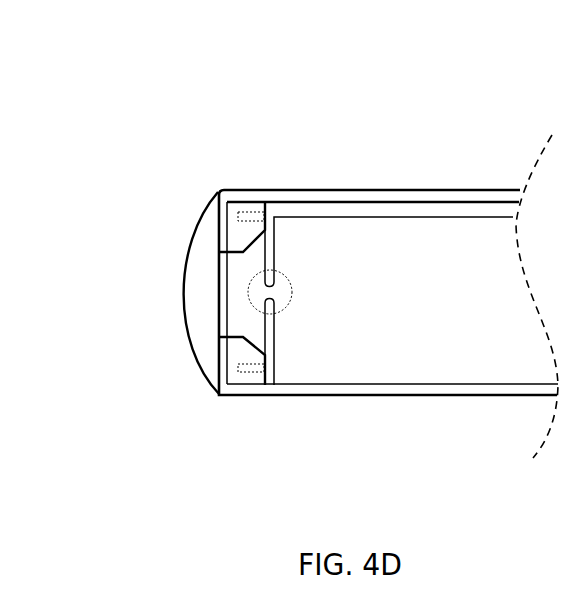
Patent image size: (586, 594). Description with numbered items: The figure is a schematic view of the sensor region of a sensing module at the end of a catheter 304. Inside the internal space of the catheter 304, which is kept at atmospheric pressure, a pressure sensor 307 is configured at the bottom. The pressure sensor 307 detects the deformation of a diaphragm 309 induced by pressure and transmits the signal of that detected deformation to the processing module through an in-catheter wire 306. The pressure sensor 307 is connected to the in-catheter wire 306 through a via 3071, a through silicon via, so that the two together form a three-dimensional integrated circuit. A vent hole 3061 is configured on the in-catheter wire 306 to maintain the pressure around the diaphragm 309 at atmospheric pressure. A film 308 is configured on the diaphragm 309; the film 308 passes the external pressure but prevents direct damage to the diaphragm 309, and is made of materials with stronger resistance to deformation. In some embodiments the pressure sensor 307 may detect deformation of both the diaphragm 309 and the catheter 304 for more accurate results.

The catheter 304 is at (368, 190).
The in-catheter wire 306 is at (445, 204).
The vent hole 3061 is at (287, 308).
The pressure sensor 307 is at (246, 212).
The via 3071 is at (238, 215).
The film 308 is at (200, 305).
The diaphragm 309 is at (222, 303).